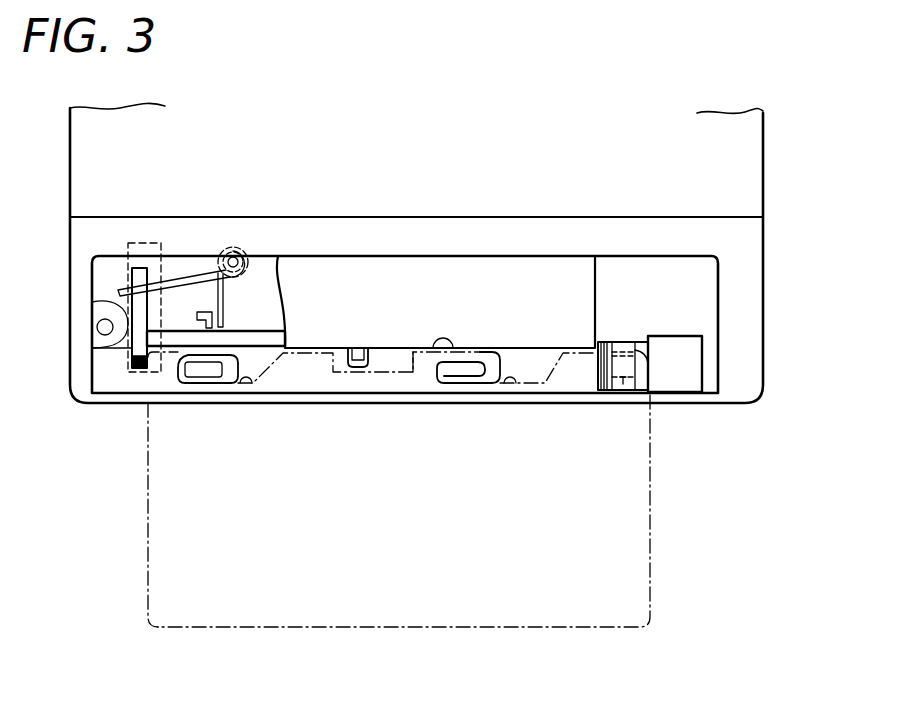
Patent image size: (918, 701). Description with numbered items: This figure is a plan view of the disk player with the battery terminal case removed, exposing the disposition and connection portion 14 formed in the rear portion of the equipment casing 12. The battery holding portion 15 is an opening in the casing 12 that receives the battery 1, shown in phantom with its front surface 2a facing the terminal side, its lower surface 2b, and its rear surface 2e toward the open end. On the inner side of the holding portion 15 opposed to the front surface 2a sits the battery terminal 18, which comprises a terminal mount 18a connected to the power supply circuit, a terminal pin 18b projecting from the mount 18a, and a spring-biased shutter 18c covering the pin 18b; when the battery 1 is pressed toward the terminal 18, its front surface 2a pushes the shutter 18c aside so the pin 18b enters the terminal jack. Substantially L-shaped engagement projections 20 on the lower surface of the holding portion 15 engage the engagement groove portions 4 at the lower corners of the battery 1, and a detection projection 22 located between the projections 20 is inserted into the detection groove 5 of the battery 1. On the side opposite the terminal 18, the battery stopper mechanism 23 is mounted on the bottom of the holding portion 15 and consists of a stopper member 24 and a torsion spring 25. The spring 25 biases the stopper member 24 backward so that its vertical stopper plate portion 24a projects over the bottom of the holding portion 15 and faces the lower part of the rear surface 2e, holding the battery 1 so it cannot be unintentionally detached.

The battery 1 is at (674, 580).
The front surface 2a is at (650, 525).
The lower surface 2b is at (426, 350).
The rear surface 2e is at (148, 523).
The engagement groove portion 4 is at (247, 387).
The detection groove 5 is at (350, 348).
The equipment casing 12 is at (70, 248).
The disposition and connection portion 14 is at (489, 300).
The battery holding portion 15 is at (319, 365).
The battery terminal 18 is at (697, 367).
The terminal mount 18a is at (684, 378).
The terminal pin 18b is at (614, 393).
The shutter 18c is at (623, 346).
The engagement projection 20 is at (203, 373).
The detection projection 22 is at (358, 357).
The battery stopper mechanism 23 is at (110, 370).
The stopper member 24 is at (132, 300).
The stopper plate portion 24a is at (140, 357).
The torsion spring 25 is at (178, 282).